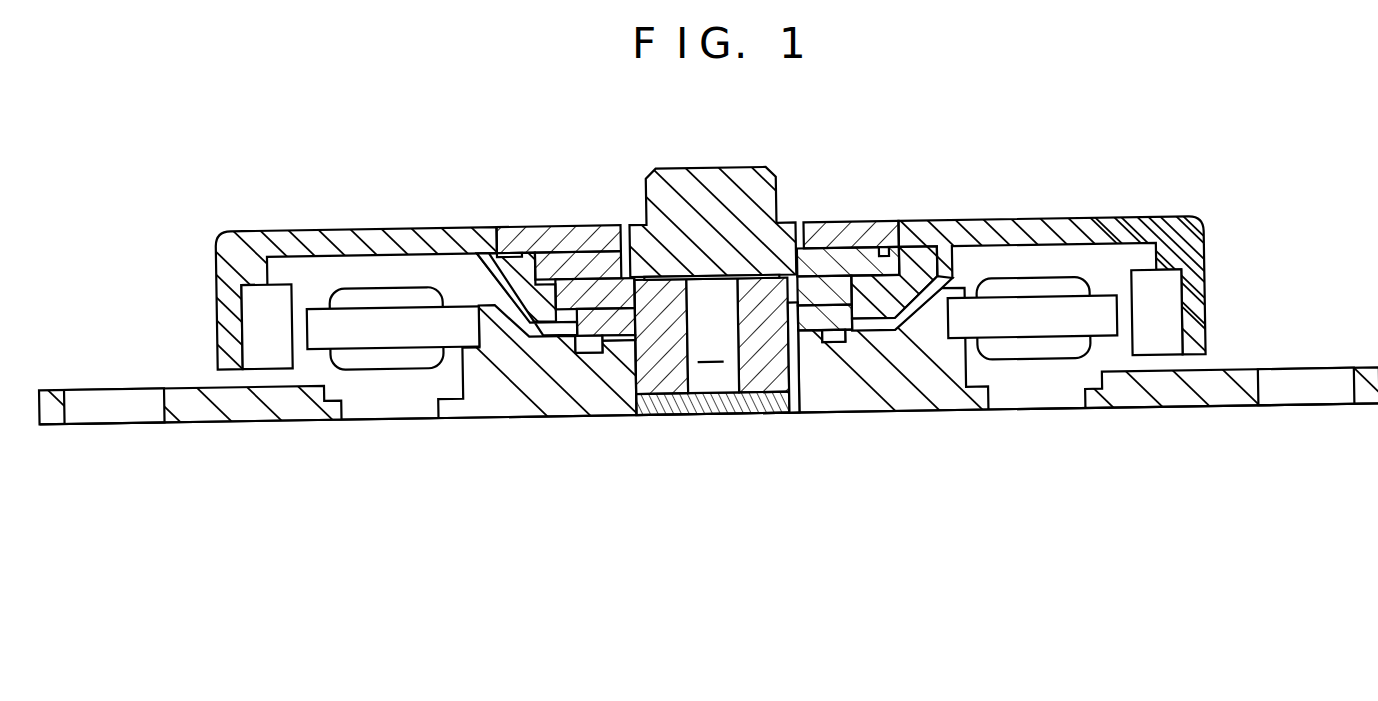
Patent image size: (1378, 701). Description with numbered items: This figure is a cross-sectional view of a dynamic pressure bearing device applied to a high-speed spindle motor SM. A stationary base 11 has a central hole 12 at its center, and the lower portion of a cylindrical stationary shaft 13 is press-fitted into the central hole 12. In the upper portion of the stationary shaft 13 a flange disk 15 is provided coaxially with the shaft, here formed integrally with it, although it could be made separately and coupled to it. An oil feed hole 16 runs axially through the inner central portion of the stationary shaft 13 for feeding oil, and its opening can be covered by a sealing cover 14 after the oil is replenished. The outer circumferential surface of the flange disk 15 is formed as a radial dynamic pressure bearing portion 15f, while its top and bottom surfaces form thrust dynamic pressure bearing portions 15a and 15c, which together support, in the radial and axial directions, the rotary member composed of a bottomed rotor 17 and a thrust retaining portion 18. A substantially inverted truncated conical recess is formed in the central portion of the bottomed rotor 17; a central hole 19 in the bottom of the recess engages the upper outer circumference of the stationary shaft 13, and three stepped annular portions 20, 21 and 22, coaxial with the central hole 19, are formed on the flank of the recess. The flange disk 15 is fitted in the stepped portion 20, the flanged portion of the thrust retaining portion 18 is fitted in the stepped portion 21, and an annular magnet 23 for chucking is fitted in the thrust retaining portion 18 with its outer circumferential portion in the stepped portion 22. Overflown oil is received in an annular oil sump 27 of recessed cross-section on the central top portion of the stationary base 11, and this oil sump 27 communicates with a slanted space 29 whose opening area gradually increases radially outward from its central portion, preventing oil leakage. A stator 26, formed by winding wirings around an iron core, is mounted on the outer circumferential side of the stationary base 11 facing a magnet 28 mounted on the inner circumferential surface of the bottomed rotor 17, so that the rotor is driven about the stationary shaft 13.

The stationary base 11 is at (532, 395).
The central hole 12 is at (667, 365).
The stationary shaft 13 is at (677, 415).
The sealing cover 14 is at (717, 407).
The flange disk 15 is at (592, 290).
The thrust dynamic pressure bearing portion 15a is at (607, 284).
The thrust dynamic pressure bearing portion 15c is at (615, 336).
The radial dynamic pressure bearing portion 15f is at (545, 296).
The oil feed hole 16 is at (712, 335).
The bottomed rotor 17 is at (1003, 233).
The thrust retaining portion 18 is at (712, 177).
The central hole 19 is at (763, 369).
The stepped annular portion 20 is at (840, 340).
The stepped annular portion 21 is at (850, 302).
The stepped annular portion 22 is at (911, 316).
The annular magnet 23 is at (827, 237).
The stator 26 is at (382, 371).
The oil sump 27 is at (590, 346).
The magnet 28 is at (264, 354).
The space 29 is at (510, 307).
The spindle motor SM is at (1123, 489).